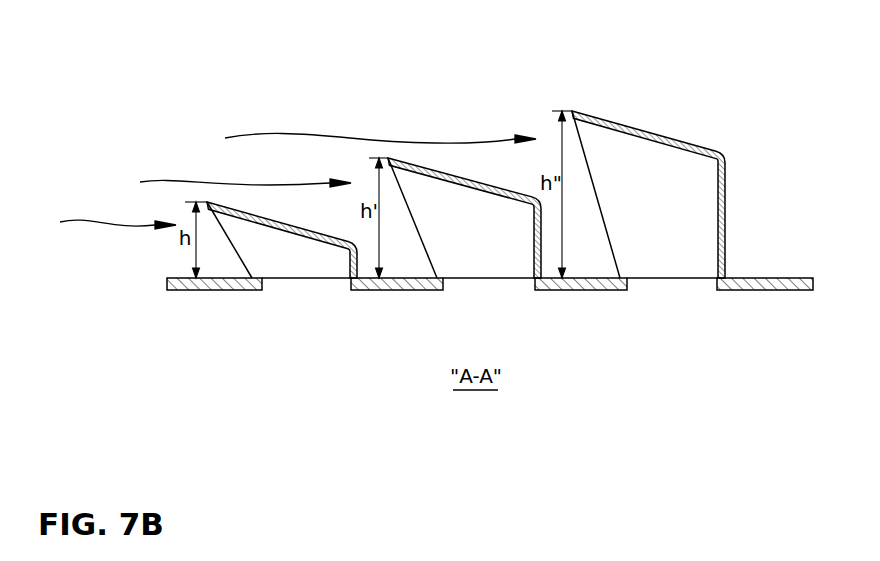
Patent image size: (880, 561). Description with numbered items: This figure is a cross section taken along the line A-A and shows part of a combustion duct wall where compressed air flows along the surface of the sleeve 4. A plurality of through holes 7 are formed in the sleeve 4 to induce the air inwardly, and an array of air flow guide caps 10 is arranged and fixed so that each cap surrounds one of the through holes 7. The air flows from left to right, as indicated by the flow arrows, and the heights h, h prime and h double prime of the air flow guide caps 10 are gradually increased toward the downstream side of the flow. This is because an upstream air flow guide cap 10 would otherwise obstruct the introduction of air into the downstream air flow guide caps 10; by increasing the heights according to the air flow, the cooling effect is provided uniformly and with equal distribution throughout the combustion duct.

The air flow guide cap 10 is at (200, 85).
The sleeve 4 is at (212, 290).
The through hole 7 is at (305, 283).